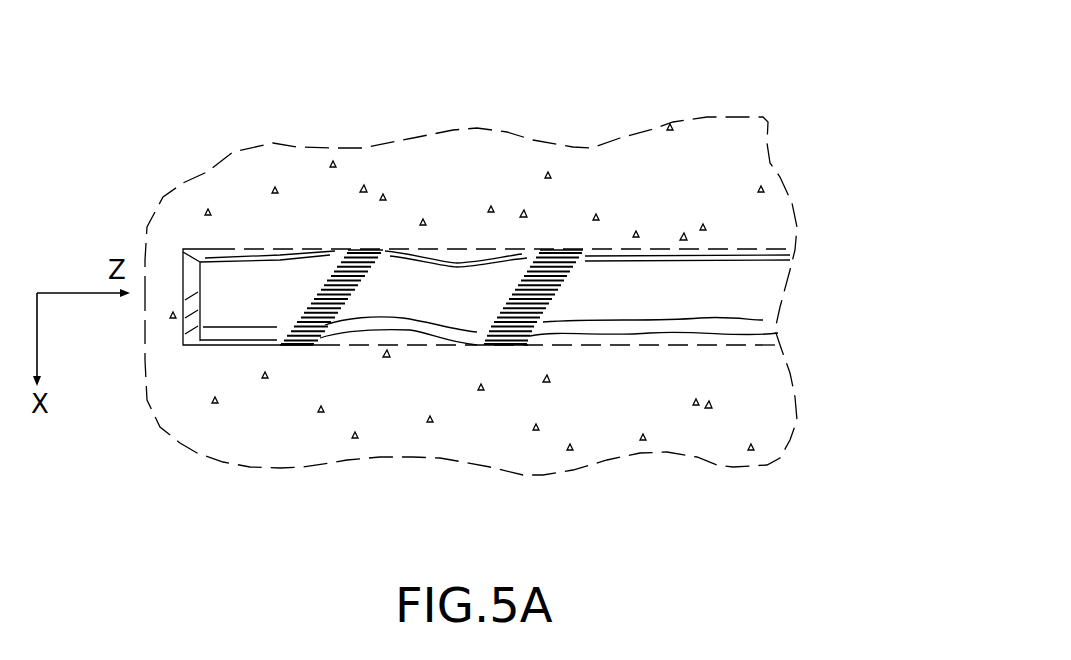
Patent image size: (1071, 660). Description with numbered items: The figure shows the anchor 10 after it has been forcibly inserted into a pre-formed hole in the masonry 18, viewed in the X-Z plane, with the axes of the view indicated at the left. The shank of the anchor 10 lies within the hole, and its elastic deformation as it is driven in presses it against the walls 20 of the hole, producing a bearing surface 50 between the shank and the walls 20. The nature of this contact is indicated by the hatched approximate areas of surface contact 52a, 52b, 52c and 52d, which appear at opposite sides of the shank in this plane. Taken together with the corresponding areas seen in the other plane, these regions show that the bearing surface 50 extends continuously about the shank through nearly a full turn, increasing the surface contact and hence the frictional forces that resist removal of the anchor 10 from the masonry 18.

The anchor 10 is at (835, 226).
The masonry 18 is at (752, 83).
The walls 20 is at (230, 250).
The bearing surface 50 is at (343, 277).
The area of surface contact 52a is at (285, 346).
The area of surface contact 52b is at (378, 251).
The area of surface contact 52c is at (490, 345).
The area of surface contact 52d is at (551, 253).